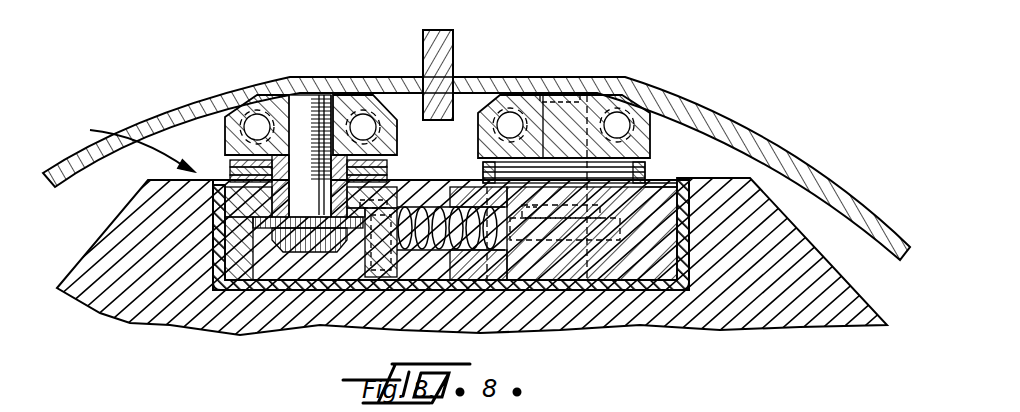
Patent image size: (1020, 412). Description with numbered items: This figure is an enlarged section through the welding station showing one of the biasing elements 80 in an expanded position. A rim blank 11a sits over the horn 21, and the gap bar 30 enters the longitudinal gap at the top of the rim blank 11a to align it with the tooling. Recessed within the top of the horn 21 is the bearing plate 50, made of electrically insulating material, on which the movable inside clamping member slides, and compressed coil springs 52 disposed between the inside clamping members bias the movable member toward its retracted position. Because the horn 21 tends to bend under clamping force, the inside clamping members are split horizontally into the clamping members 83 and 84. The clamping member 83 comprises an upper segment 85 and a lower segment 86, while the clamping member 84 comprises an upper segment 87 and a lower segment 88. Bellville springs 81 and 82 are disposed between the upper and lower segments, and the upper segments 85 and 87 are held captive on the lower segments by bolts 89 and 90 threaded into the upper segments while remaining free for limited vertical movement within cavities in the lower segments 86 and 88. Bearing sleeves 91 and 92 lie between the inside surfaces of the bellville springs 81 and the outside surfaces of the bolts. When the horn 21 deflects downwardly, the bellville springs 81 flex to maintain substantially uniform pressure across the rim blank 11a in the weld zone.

The rim blank 11a is at (768, 143).
The horn 21 is at (790, 327).
The gap bar 30 is at (453, 46).
The bearing plate 50 is at (570, 234).
The compressed coil springs 52 is at (440, 216).
The biasing elements 80 is at (123, 144).
The bellville springs 81 is at (392, 178).
The bellville springs 82 is at (647, 178).
The split inside clamping member 83 is at (223, 105).
The split inside clamping member 84 is at (680, 100).
The upper segment 85 is at (226, 143).
The lower segment 86 is at (250, 253).
The upper segment 87 is at (654, 145).
The lower segment 88 is at (689, 250).
The bolts 89 is at (313, 95).
The bolts 90 is at (592, 80).
The bearing sleeve 91 is at (213, 217).
The bearing sleeve 92 is at (608, 210).